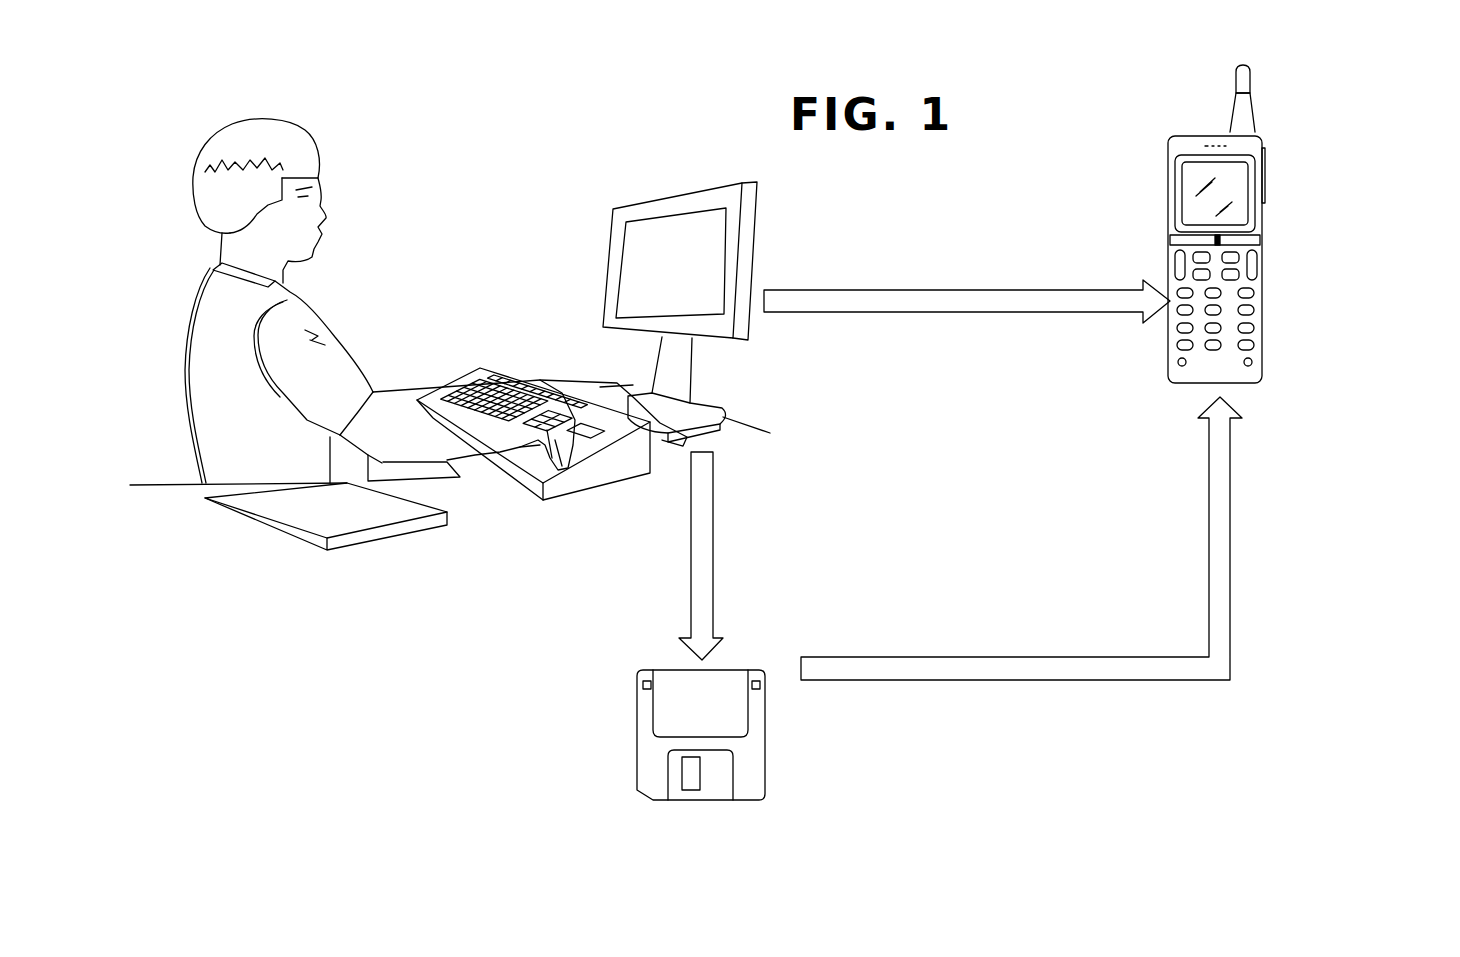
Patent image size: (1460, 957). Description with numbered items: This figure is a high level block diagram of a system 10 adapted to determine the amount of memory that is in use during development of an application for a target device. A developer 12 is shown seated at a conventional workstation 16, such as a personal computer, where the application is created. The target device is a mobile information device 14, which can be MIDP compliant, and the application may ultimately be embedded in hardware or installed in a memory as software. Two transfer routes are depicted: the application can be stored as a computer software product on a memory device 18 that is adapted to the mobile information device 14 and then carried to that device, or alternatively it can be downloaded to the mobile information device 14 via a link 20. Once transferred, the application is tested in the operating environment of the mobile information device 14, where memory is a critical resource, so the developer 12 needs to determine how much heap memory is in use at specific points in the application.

The system 10 is at (1357, 93).
The developer 12 is at (202, 185).
The mobile information device 14 is at (1252, 300).
The workstation 16 is at (453, 375).
The memory device 18 is at (760, 742).
The link 20 is at (825, 290).